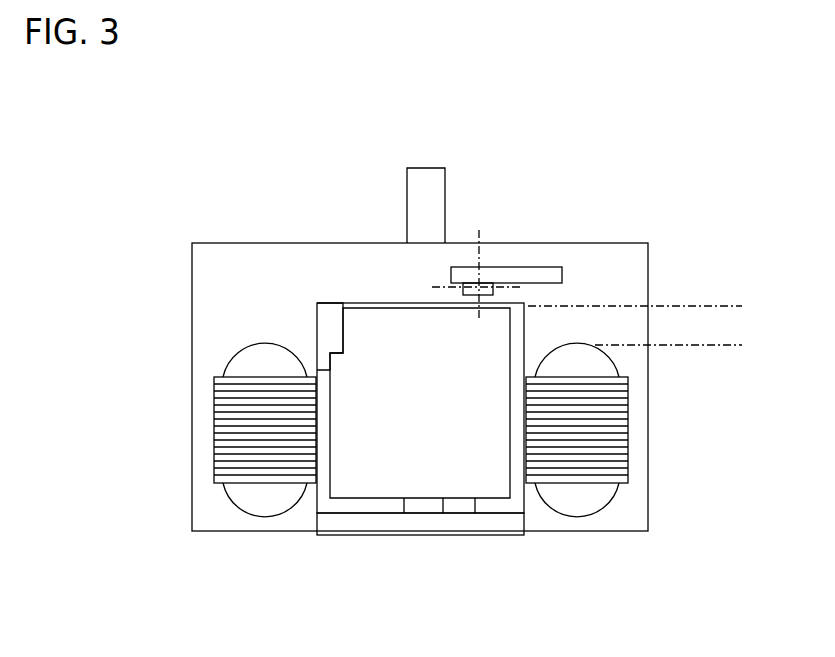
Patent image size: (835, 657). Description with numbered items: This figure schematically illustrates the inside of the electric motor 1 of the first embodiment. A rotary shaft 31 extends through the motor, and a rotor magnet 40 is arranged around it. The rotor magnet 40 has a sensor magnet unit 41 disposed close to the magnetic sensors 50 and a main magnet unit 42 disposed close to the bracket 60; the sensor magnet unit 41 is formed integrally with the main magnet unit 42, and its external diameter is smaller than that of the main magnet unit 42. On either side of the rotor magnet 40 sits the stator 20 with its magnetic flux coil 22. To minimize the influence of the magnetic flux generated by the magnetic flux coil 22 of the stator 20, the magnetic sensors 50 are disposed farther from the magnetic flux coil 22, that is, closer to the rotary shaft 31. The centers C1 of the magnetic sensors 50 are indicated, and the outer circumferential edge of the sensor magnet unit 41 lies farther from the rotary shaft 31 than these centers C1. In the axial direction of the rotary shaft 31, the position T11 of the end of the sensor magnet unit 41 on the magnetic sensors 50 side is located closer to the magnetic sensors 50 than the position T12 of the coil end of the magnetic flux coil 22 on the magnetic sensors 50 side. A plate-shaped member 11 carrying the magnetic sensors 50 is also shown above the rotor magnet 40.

The electric motor 1 is at (432, 642).
The plate / holding member 11 is at (546, 267).
The stator 20 is at (217, 510).
The magnetic flux coil 22 is at (237, 358).
The rotary shaft 31 is at (446, 172).
The rotor magnet 40 is at (318, 330).
The sensor magnet unit 41 is at (330, 344).
The main magnet unit 42 is at (470, 498).
The magnetic sensors 50 is at (452, 292).
The bracket 60 is at (368, 535).
The centers of the magnetic sensors C1 is at (486, 290).
The position of one end of the sensor magnet unit T11 is at (656, 308).
The position of one coil end of the magnetic flux coil T12 is at (690, 348).